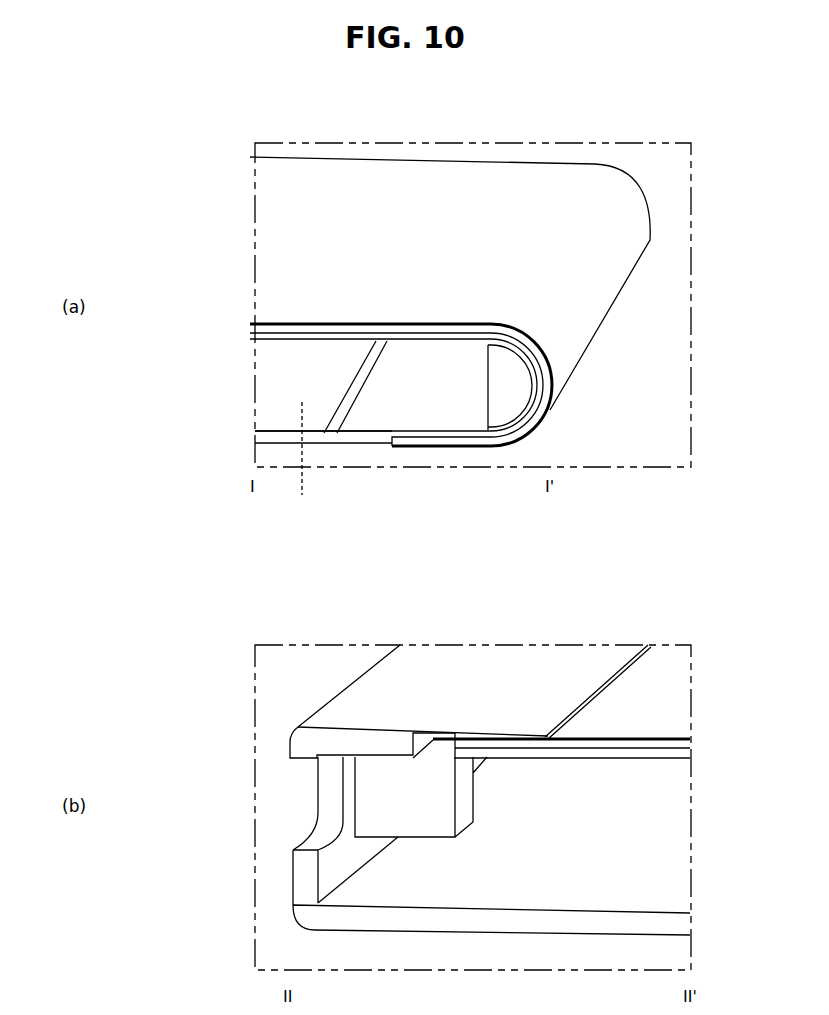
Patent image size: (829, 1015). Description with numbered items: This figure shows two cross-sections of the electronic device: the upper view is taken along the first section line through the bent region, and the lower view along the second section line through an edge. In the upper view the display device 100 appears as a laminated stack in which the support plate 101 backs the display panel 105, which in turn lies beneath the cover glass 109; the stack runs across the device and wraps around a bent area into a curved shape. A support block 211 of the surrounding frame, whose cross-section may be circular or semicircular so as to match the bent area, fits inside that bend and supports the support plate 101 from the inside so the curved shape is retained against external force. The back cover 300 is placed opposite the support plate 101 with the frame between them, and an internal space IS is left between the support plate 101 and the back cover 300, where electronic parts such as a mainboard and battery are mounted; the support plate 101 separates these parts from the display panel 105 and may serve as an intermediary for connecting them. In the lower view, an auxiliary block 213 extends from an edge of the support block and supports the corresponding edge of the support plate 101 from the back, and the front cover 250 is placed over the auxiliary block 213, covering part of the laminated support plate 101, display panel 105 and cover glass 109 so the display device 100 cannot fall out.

The display device 100 is at (168, 260).
The cover glass 109 is at (268, 307).
The display panel 105 is at (258, 325).
The support plate 101 is at (258, 338).
The back cover 300 is at (310, 399).
The internal space IS is at (307, 408).
The support block 211 is at (509, 405).
The front cover 250 is at (340, 711).
The auxiliary block 213 is at (328, 800).